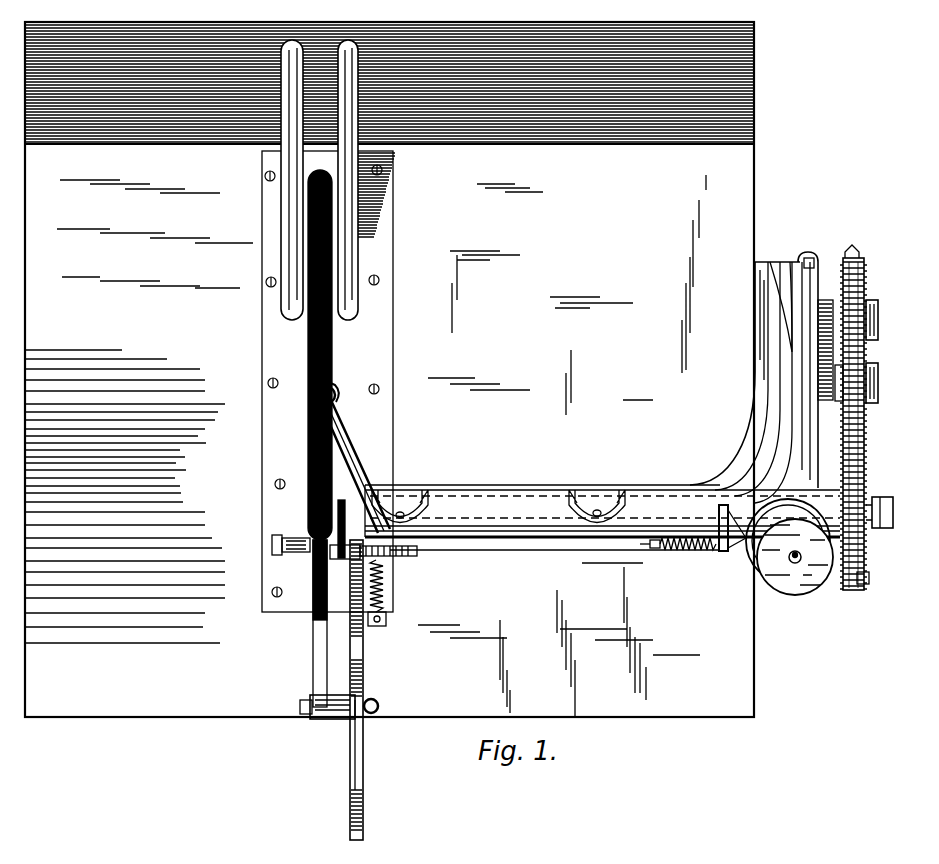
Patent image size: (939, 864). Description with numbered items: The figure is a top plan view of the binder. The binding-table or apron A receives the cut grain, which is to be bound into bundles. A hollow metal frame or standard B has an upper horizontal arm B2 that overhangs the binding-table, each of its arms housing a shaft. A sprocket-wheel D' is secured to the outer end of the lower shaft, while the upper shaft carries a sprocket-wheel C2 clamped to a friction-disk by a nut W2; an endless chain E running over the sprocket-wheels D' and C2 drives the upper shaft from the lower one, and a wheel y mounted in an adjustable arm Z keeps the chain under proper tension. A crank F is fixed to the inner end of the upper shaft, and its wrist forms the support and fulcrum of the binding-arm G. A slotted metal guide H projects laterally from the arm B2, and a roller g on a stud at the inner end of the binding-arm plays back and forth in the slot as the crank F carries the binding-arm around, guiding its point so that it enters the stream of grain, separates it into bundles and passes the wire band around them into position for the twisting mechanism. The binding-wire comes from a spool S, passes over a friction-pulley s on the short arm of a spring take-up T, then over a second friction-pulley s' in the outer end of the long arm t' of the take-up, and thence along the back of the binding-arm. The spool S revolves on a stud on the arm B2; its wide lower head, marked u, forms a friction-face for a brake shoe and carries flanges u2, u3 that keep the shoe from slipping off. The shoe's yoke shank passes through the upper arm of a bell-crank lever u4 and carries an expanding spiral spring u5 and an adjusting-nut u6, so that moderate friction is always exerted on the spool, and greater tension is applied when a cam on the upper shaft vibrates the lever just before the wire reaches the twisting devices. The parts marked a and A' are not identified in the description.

The binding-table A is at (389, 369).
The vertical rod a is at (331, 356).
The binding-arm G is at (316, 598).
The long arm of the take-up t' is at (339, 402).
The friction-pulley s' is at (351, 375).
The spring take-up T is at (358, 463).
The upper horizontal arm B2 is at (602, 517).
The metal frame B is at (754, 377).
The adjustable arm Z is at (834, 348).
The endless chain E is at (866, 441).
The sprocket-wheel D' is at (885, 320).
The tension wheel y is at (880, 383).
The nut W2 is at (896, 512).
The sprocket-wheel C2 is at (869, 578).
The lower circular head u is at (732, 520).
The flange u2 is at (751, 495).
The flange u3 is at (749, 553).
The bell-crank lever u4 is at (724, 556).
The expanding spiral spring u5 is at (703, 551).
The adjusting-nut u6 is at (669, 554).
The spool S is at (789, 547).
The crank F is at (341, 560).
The friction-pulley s is at (388, 566).
The slotted metal guide H is at (364, 666).
The roller g is at (378, 703).
The bolt A' is at (272, 560).